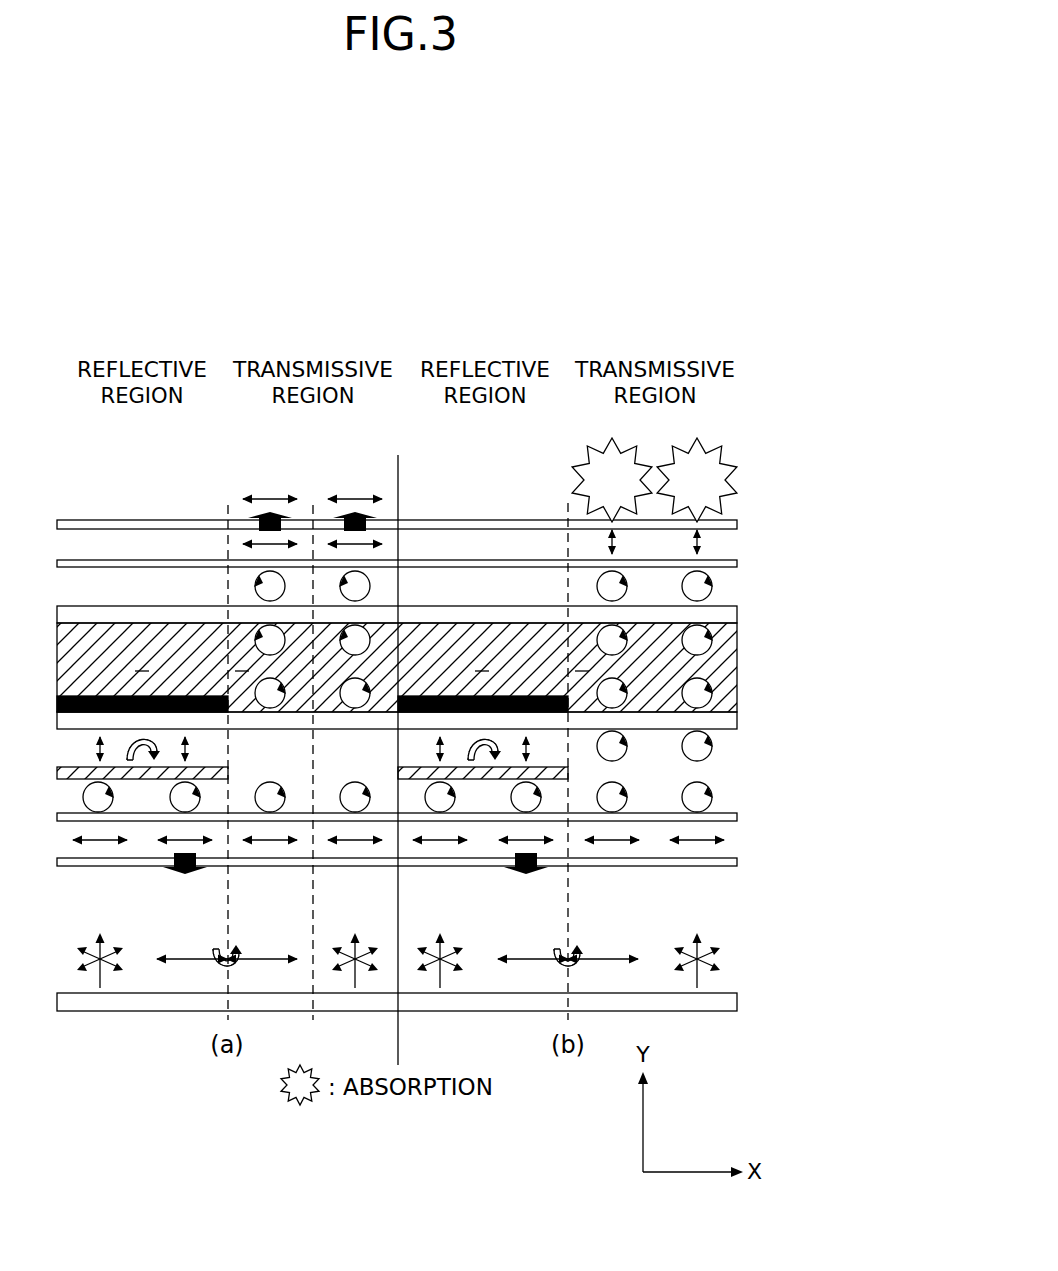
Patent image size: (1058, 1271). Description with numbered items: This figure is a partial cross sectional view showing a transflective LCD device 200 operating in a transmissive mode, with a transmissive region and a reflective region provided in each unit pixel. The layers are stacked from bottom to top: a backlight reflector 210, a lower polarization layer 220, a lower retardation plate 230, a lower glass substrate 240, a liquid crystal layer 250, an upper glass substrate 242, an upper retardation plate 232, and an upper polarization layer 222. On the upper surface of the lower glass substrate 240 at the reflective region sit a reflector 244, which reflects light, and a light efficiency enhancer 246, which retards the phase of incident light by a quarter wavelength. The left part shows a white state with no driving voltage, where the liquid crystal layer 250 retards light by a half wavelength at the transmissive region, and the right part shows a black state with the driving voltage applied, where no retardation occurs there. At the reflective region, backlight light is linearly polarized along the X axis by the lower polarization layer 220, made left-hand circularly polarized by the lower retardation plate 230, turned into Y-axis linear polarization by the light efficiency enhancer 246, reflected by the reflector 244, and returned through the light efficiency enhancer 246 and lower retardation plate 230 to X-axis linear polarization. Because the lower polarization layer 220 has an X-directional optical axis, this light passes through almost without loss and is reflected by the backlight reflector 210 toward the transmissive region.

The transflective LCD device 200 is at (857, 290).
The backlight reflector 210 is at (737, 1000).
The lower polarization layer 220 is at (737, 862).
The upper polarization layer 222 is at (737, 524).
The lower retardation plate 230 is at (737, 817).
The upper retardation plate 232 is at (737, 563).
The lower glass substrate 240 is at (725, 720).
The upper glass substrate 242 is at (737, 614).
The reflector 244 is at (568, 698).
The light efficiency enhancer 246 is at (568, 772).
The liquid crystal layer 250 is at (728, 648).